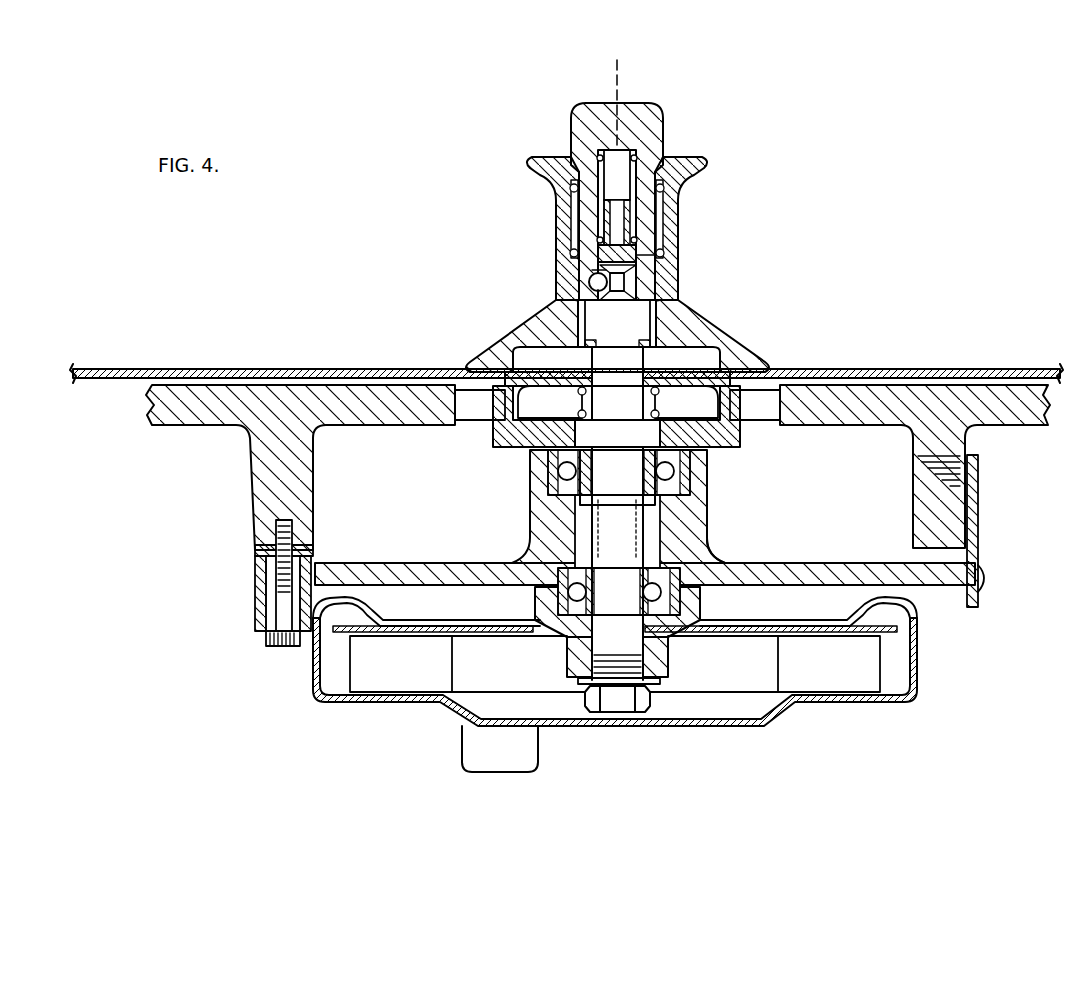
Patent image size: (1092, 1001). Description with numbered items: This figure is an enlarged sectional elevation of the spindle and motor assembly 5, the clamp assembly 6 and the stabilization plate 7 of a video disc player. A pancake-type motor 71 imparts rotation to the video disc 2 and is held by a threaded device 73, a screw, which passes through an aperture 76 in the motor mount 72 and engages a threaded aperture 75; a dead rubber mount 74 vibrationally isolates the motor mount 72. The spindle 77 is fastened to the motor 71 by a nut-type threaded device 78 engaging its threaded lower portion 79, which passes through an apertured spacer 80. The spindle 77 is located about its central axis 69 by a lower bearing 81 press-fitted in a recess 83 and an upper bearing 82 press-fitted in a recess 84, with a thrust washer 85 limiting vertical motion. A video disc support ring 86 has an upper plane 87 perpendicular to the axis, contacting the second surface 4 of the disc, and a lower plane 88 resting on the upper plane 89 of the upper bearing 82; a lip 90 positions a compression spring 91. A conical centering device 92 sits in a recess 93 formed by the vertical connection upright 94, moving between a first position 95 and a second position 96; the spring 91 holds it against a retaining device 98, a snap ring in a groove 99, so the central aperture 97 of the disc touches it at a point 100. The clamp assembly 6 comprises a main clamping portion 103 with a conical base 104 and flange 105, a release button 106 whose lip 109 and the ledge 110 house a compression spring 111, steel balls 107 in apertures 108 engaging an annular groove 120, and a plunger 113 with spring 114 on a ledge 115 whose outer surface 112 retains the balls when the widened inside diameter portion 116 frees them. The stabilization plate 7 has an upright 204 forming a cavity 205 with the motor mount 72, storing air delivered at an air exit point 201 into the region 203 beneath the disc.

The video disc 2 is at (1036, 369).
The second surface 4 is at (784, 398).
The spindle and motor assembly 5 is at (692, 735).
The clamp assembly 6 is at (795, 236).
The stabilization plate 7 is at (1010, 428).
The central axis 69 is at (625, 86).
The motor 71 is at (835, 698).
The motor mount 72 is at (840, 566).
The threaded device 73 is at (280, 606).
The dead rubber mount 74 is at (314, 551).
The threaded aperture 75 is at (296, 527).
The aperture 76 is at (255, 576).
The spindle 77 is at (658, 308).
The threaded device 78 is at (652, 700).
The threaded lower portion 79 is at (640, 660).
The apertured spacer 80 is at (662, 681).
The lower bearing 81 is at (700, 556).
The upper bearing 82 is at (690, 483).
The recess 83 is at (560, 585).
The recess 84 is at (548, 472).
The thrust washer 85 is at (707, 528).
The video disc support ring 86 is at (735, 447).
The upper plane 87 is at (470, 370).
The lower plane 88 is at (617, 490).
The upper plane 89 is at (606, 500).
The lip 90 is at (617, 383).
The compression spring 91 is at (660, 396).
The centering device 92 is at (480, 405).
The recess 93 is at (755, 405).
The vertical connection upright 94 is at (742, 441).
The first position 95 is at (588, 346).
The second position 96 is at (727, 330).
The central aperture 97 is at (500, 350).
The retaining device 98 is at (645, 346).
The groove 99 is at (617, 323).
The point 100 is at (530, 395).
The main clamping portion 103 is at (680, 218).
The conical base 104 is at (758, 352).
The flange 105 is at (705, 162).
The release button 106 is at (665, 120).
The steel balls 107 is at (588, 280).
The apertures 108 is at (590, 272).
The lip 109 is at (667, 191).
The ledge 110 is at (660, 257).
The compression spring 111 is at (568, 192).
The outer surface 112 is at (608, 228).
The plunger 113 is at (637, 238).
The compression spring 114 is at (633, 163).
The ledge 115 is at (606, 218).
The widened inside diameter portion 116 is at (585, 296).
The annular groove 120 is at (626, 282).
The air exit point 201 is at (793, 372).
The region 203 is at (884, 372).
The upright 204 is at (315, 487).
The cavity 205 is at (858, 497).